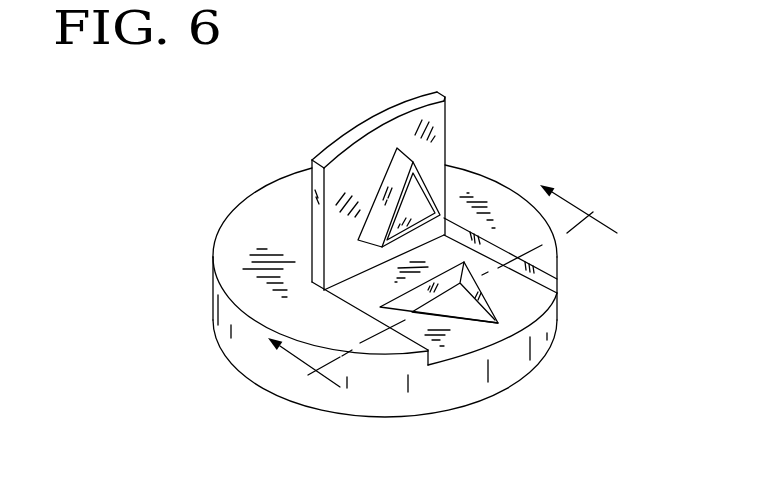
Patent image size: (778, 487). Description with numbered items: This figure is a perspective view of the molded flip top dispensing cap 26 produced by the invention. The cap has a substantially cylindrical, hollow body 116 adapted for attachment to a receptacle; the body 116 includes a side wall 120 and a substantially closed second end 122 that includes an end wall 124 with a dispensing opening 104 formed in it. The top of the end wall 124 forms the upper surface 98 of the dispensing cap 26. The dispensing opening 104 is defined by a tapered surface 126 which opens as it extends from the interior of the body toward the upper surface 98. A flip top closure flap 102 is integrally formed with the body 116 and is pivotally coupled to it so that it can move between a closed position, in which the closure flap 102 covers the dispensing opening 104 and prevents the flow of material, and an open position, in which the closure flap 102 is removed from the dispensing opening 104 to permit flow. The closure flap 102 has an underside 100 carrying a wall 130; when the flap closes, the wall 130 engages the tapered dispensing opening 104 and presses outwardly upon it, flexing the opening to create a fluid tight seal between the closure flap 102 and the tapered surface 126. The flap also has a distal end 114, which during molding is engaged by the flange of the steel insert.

The flip top dispensing cap 26 is at (594, 151).
The upper surface 98 is at (238, 252).
The underside of flip top closure flap 100 is at (347, 167).
The flip top closure flap 102 is at (408, 92).
The dispensing opening 104 is at (449, 307).
The distal end of flip top closure flap 114 is at (373, 112).
The hollow body 116 is at (398, 402).
The side wall 120 is at (558, 293).
The second end 122 is at (500, 223).
The end wall 124 is at (468, 183).
The tapered surface 126 is at (557, 333).
The wall 130 is at (387, 211).